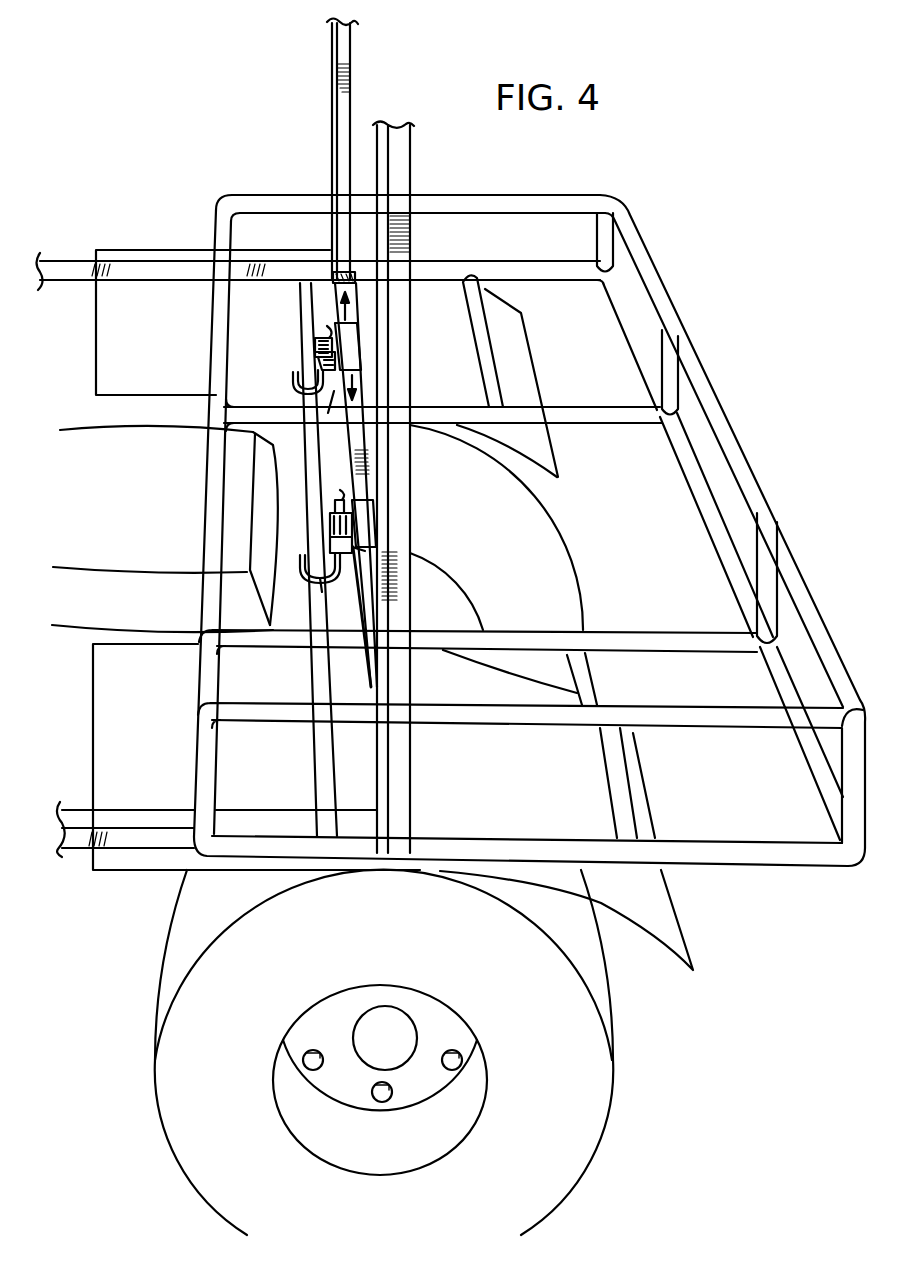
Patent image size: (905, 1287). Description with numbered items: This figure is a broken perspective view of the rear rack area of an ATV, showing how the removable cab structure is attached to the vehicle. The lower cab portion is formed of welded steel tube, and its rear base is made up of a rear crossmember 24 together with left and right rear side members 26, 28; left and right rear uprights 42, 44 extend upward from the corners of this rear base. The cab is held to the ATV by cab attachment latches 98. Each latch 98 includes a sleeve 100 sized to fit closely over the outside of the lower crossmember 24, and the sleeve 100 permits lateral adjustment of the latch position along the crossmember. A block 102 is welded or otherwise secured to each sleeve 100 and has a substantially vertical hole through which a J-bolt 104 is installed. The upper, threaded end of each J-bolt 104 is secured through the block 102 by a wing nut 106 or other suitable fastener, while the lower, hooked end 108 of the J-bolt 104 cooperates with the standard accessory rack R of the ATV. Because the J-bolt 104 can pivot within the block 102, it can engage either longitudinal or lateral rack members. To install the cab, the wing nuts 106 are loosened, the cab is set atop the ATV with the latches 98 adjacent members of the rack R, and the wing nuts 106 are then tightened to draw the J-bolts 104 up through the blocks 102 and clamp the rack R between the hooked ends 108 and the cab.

The rear crossmember 24 is at (336, 479).
The left rear side member 26 is at (135, 866).
The right rear side member 28 is at (154, 259).
The left rear upright 42 is at (412, 502).
The right rear upright 44 is at (332, 122).
The cab attachment latch 98 is at (287, 312).
The sleeve 100 is at (363, 345).
The block 102 is at (331, 506).
The J-bolt 104 is at (325, 337).
The wing nut 106 is at (316, 345).
The hooked end 108 is at (292, 375).
The accessory rack R is at (212, 340).